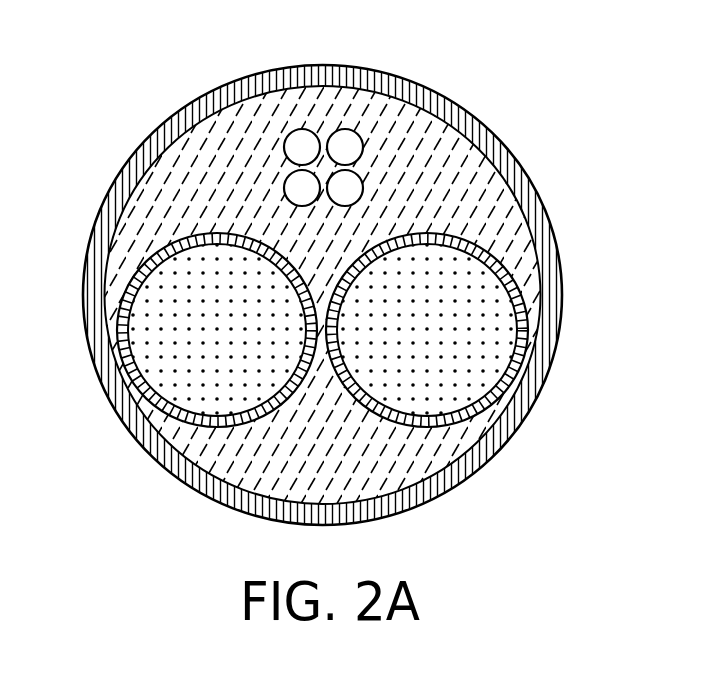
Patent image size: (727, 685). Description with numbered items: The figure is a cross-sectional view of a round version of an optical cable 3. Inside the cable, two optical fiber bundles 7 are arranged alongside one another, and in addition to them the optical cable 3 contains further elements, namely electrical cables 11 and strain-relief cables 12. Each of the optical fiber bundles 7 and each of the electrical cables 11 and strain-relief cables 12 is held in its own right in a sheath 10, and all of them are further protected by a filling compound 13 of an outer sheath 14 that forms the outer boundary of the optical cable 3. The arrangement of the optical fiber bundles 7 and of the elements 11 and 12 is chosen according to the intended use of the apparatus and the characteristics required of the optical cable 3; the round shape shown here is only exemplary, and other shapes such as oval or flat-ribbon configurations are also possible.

The optical cable 3 is at (541, 478).
The optical fiber bundles 7 is at (157, 365).
The sheath 10 is at (138, 270).
The electrical cables 11 is at (344, 144).
The strain-relief cables 12 is at (343, 257).
The filling compound 13 is at (440, 148).
The outer sheath 14 is at (143, 162).